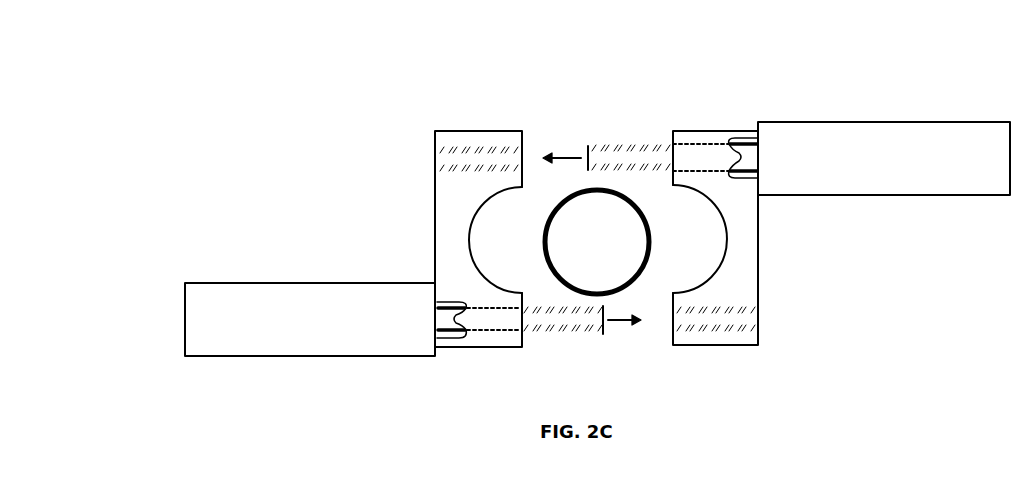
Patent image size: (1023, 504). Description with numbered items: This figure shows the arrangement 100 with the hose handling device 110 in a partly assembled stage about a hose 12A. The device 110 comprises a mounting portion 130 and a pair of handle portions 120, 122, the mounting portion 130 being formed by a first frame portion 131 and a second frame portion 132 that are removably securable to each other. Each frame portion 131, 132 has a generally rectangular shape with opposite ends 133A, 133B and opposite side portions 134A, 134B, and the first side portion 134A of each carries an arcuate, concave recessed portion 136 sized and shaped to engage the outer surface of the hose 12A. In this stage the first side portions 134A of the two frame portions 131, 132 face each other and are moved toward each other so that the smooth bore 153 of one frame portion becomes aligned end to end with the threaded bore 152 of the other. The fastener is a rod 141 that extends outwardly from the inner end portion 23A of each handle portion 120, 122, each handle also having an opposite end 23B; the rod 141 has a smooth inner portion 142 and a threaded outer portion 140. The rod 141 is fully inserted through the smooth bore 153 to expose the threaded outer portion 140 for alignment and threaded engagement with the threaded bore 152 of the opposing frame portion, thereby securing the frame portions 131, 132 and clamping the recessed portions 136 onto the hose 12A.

The arrangement 100 is at (292, 85).
The hose handling device 110 is at (281, 185).
The handle portion 120 is at (227, 365).
The handle portion 122 is at (930, 200).
The inner end portion 23A is at (414, 283).
The lever second side 23B is at (201, 283).
The hose 12A is at (583, 274).
The mounting portion 130 is at (507, 62).
The first frame portion 131 is at (430, 190).
The second frame portion 132 is at (768, 232).
The end 133A is at (594, 243).
The end 133B is at (622, 219).
The first side portion 134A is at (521, 142).
The second side portion 134B is at (436, 152).
The recessed portion 136 is at (469, 233).
The threaded outer portion 140 is at (597, 221).
The rod 141 is at (630, 138).
The smooth inner portion 142 is at (478, 347).
The threaded bore 152 is at (457, 150).
The smooth bore 153 is at (508, 347).